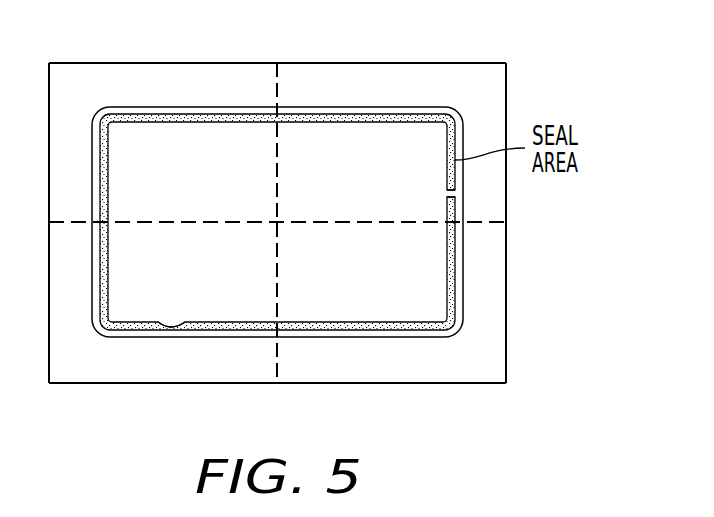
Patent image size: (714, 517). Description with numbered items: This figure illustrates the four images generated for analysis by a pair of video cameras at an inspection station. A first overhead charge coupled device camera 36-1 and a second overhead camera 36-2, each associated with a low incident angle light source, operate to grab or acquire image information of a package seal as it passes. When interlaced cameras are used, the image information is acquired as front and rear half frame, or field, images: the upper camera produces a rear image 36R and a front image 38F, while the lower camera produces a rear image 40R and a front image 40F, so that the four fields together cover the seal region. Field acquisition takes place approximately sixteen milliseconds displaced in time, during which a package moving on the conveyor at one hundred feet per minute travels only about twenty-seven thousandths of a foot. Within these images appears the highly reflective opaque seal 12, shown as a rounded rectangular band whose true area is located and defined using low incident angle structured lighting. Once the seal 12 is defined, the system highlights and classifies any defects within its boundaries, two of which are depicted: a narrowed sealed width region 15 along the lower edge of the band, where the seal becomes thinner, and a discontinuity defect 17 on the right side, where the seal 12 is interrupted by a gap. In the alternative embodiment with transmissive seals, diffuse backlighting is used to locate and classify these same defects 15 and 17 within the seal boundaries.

The seal 12 is at (173, 124).
The narrowed sealed width region 15 is at (170, 322).
The discontinuity defect 17 is at (447, 195).
The overhead CCD camera 36-1 is at (132, 77).
The overhead CCD camera 36-2 is at (134, 383).
The rear half frame image 36R is at (240, 62).
The front half frame image 38F is at (445, 63).
The rear half frame image 40R is at (62, 383).
The front half frame image 40F is at (475, 383).